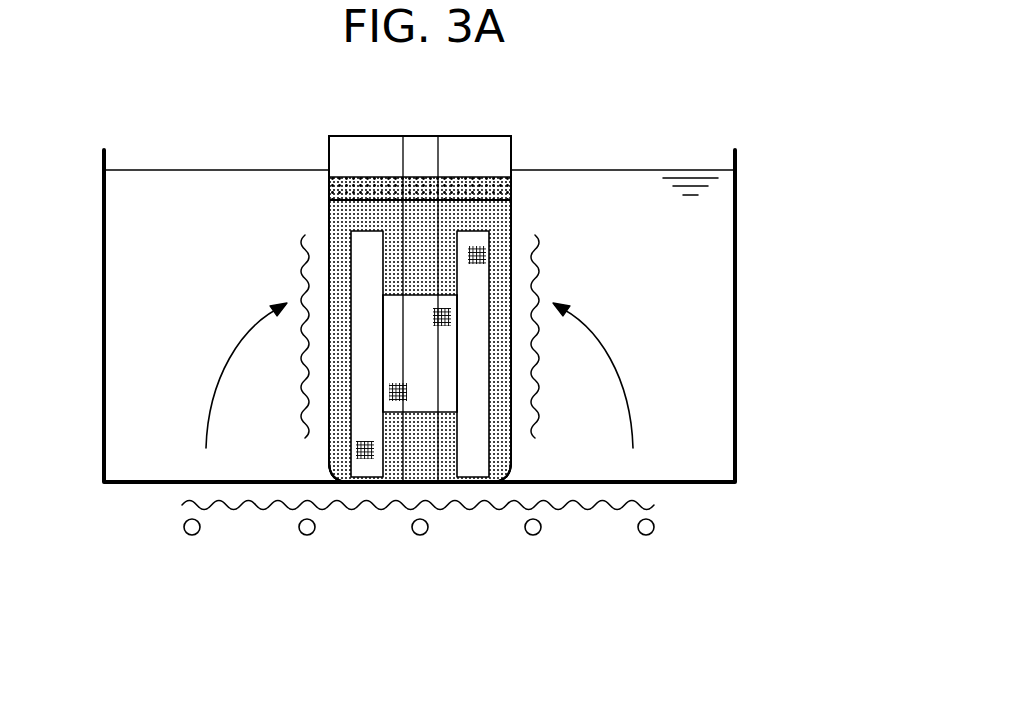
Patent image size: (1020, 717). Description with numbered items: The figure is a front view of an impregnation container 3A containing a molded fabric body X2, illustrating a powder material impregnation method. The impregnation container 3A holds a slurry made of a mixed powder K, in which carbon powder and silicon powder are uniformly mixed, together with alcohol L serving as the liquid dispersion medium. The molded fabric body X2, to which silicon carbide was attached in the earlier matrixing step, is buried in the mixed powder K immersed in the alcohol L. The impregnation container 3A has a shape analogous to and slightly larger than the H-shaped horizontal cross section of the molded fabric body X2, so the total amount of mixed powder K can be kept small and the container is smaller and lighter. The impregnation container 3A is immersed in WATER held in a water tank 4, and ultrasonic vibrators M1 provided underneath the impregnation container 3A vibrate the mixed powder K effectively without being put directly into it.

The impregnation container 3A is at (460, 282).
The water tank 4 is at (737, 282).
The mixed powder K is at (330, 215).
The alcohol L is at (469, 180).
The molded fabric body X2 is at (371, 229).
The ultrasonic vibrators M1 is at (186, 534).
The water WATER is at (163, 169).